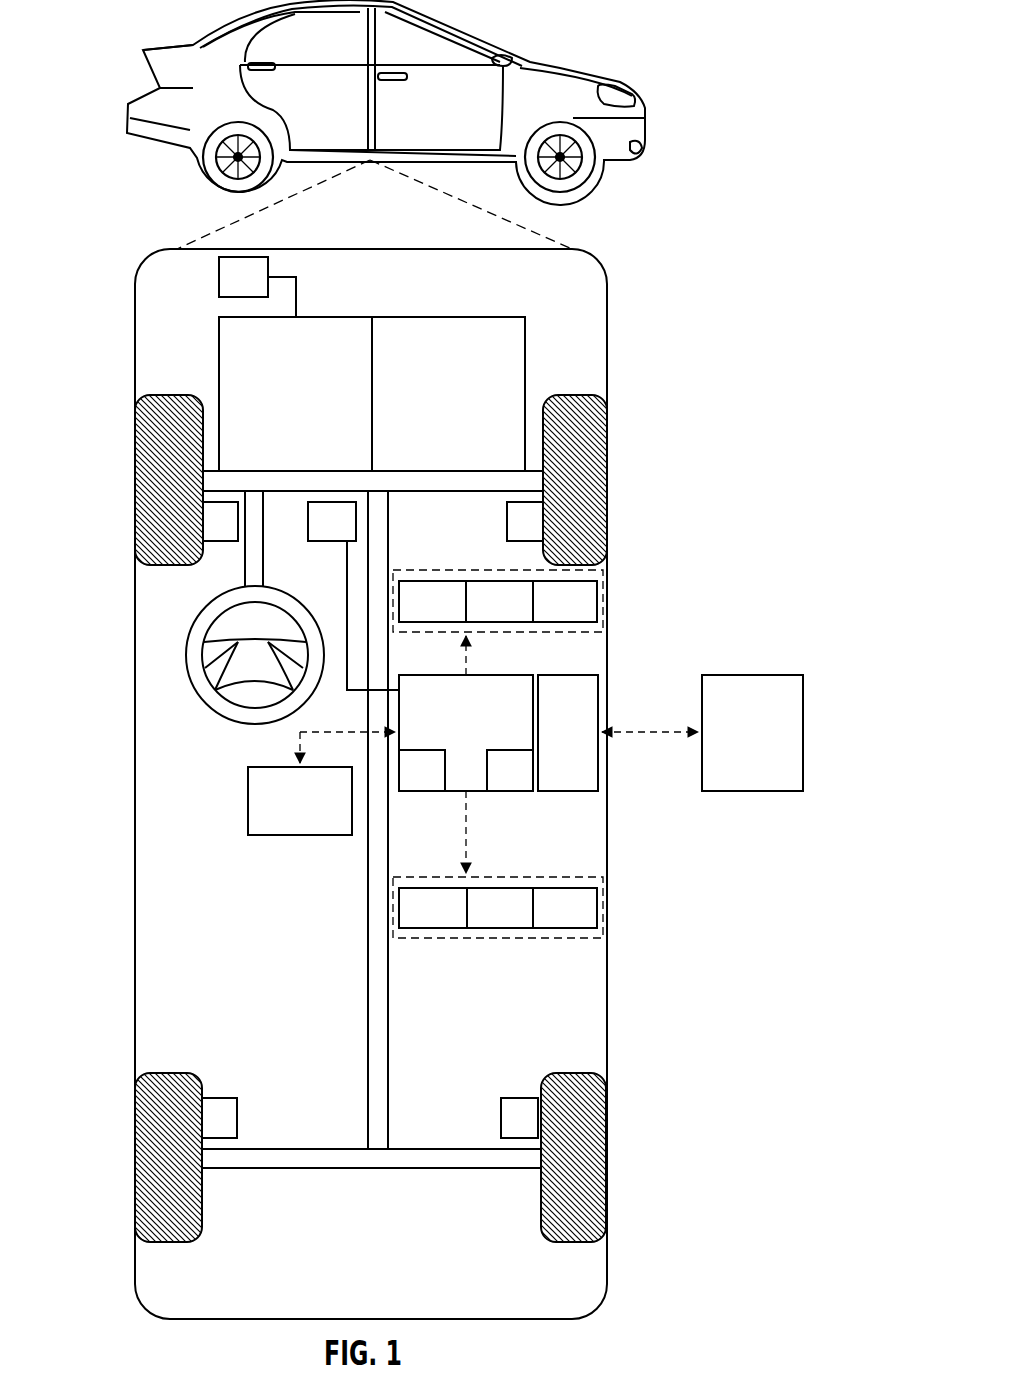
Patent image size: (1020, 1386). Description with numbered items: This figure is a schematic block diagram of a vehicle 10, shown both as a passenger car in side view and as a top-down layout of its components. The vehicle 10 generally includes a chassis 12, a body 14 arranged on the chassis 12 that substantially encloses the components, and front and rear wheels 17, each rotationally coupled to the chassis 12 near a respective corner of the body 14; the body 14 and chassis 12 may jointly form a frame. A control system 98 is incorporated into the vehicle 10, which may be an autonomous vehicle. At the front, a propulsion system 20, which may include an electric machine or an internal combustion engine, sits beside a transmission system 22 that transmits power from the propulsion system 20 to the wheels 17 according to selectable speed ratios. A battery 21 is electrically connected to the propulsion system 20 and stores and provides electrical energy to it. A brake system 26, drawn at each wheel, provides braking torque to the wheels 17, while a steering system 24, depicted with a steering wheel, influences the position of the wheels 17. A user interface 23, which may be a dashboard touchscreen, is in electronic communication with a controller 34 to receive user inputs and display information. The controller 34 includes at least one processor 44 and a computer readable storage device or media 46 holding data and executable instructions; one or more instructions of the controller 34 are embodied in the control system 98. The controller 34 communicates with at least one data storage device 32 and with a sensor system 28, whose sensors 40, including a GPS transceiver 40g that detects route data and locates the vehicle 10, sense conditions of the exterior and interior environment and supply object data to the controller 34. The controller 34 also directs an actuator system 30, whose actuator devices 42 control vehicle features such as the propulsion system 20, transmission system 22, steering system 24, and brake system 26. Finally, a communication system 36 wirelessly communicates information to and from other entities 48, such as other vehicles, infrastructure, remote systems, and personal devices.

The vehicle 10 is at (138, 80).
The chassis 12 is at (367, 1012).
The body 14 is at (135, 862).
The front and rear wheels 17 is at (170, 395).
The propulsion system 20 is at (281, 410).
The battery 21 is at (228, 257).
The transmission system 22 is at (433, 410).
The user interface 23 is at (318, 536).
The steering system 24 is at (275, 563).
The brake system 26 is at (534, 1132).
The sensor system 28 is at (477, 568).
The actuator system 30 is at (486, 938).
The data storage device 32 is at (286, 817).
The controller 34 is at (451, 727).
The communication system 36 is at (554, 749).
The sensors 40 is at (513, 616).
The GPS transceiver 40g is at (543, 616).
The actuator devices 42 is at (579, 923).
The processor 44 is at (408, 785).
The computer readable storage device or media 46 is at (496, 785).
The other entities 48 is at (739, 749).
The control system 98 is at (720, 290).